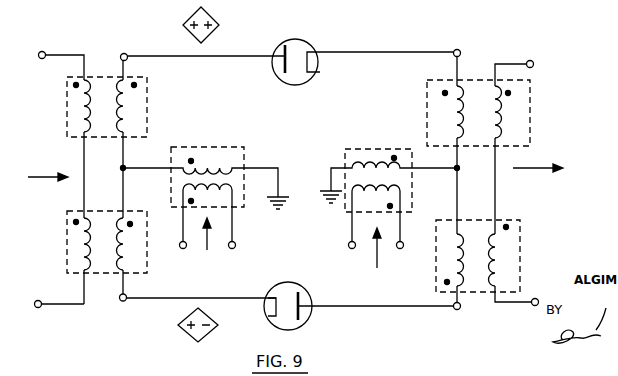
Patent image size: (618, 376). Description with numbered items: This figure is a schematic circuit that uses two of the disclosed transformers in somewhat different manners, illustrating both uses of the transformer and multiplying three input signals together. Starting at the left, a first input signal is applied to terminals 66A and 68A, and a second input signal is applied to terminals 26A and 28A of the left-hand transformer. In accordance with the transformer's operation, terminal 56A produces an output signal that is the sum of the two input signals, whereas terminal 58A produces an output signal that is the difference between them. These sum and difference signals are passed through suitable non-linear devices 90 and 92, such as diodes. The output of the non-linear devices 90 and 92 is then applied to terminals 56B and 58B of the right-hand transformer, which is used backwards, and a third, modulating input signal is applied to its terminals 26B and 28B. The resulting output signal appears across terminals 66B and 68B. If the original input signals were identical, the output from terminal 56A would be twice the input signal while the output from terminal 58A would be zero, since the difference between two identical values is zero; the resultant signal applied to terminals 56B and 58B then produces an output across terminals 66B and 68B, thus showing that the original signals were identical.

The terminal 66A is at (44, 51).
The terminal 56A is at (123, 53).
The non-linear device 90 is at (296, 39).
The terminal 56B is at (455, 49).
The terminal 66B is at (534, 68).
The terminal 26A is at (181, 249).
The terminal 28A is at (235, 248).
The terminal 28B is at (349, 243).
The terminal 26B is at (399, 249).
The terminal 68A is at (46, 289).
The terminal 58A is at (120, 300).
The non-linear device 92 is at (283, 282).
The terminal 58B is at (455, 309).
The terminal 68B is at (533, 306).